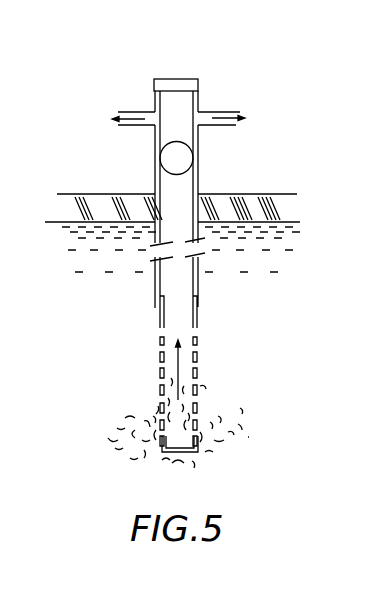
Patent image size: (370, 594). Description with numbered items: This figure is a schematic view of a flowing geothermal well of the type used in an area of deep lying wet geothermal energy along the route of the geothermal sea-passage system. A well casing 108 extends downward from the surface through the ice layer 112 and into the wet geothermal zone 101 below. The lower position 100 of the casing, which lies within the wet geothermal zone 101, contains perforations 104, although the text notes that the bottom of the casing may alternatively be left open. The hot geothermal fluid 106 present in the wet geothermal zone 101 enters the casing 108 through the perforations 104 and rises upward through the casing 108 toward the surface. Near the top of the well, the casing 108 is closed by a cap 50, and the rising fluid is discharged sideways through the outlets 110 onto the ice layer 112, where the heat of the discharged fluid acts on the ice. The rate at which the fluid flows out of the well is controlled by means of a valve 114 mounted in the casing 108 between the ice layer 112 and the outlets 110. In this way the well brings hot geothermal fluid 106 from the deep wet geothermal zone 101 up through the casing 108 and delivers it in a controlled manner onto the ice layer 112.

The cap 50 is at (179, 78).
The outlets 110 is at (133, 112).
The valve 114 is at (155, 160).
The ice layer 112 is at (244, 194).
The wet geothermal zone 101 is at (60, 447).
The casing 108 is at (199, 283).
The position of the well casing 100 is at (187, 383).
The perforations 104 is at (199, 362).
The hot geothermal fluid 106 is at (232, 418).